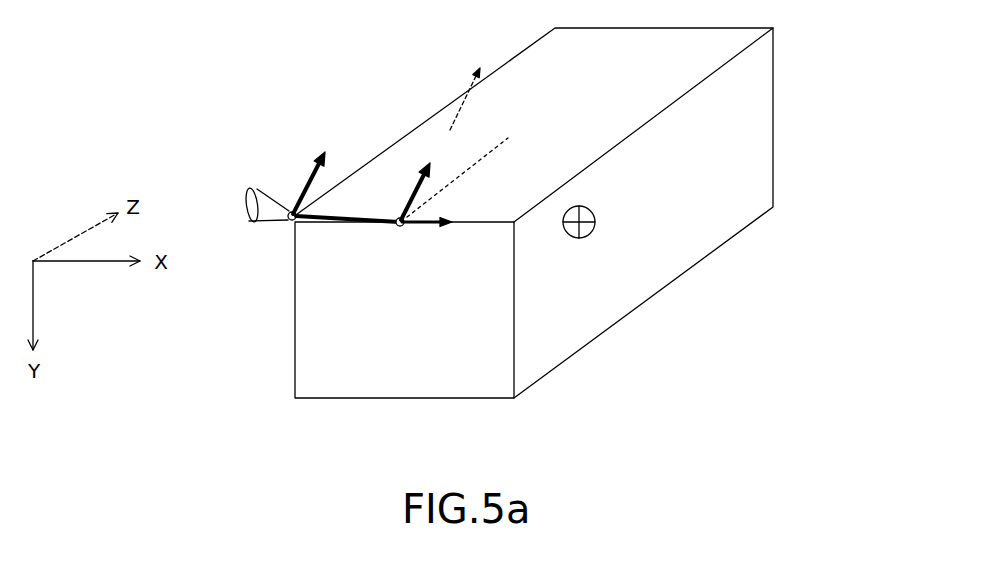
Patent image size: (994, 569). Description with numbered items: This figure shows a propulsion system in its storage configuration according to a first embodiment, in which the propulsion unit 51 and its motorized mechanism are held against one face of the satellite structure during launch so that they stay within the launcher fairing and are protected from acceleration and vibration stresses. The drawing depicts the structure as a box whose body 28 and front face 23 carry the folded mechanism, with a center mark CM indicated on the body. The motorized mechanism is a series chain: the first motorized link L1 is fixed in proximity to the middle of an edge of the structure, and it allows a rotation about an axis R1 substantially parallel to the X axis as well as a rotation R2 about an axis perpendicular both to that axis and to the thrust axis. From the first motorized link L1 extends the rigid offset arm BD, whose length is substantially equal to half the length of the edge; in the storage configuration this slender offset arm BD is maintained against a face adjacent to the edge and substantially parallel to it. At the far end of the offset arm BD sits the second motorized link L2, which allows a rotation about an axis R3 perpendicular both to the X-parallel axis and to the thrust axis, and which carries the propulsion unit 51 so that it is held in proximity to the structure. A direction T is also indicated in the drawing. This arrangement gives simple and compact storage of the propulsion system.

The housing 28 is at (750, 143).
The front surface 23 is at (463, 387).
The propulsion unit 51 is at (268, 197).
The center mark CM is at (595, 226).
The first motorized link L1 is at (397, 227).
The second motorized link L2 is at (290, 226).
The rotation axis of first motorized link R1 is at (423, 232).
The rotation of first motorized link R2 is at (437, 164).
The rotation axis of second motorized link R3 is at (325, 150).
The direction T is at (467, 80).
The offset arm BD is at (348, 225).